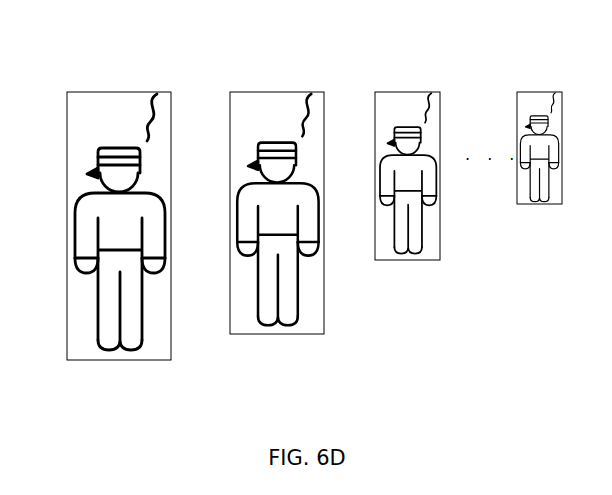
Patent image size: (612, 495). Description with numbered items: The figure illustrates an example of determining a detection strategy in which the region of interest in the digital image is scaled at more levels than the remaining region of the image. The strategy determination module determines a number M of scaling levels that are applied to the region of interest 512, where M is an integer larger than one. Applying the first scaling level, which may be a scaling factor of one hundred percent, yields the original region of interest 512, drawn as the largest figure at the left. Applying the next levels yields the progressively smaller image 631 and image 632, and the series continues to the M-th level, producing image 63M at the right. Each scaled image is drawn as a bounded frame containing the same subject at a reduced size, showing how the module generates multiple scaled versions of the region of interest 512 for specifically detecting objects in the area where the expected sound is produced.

The region of interest 512 is at (130, 80).
The image 631 is at (292, 78).
The image 632 is at (433, 76).
The image 63M is at (547, 76).